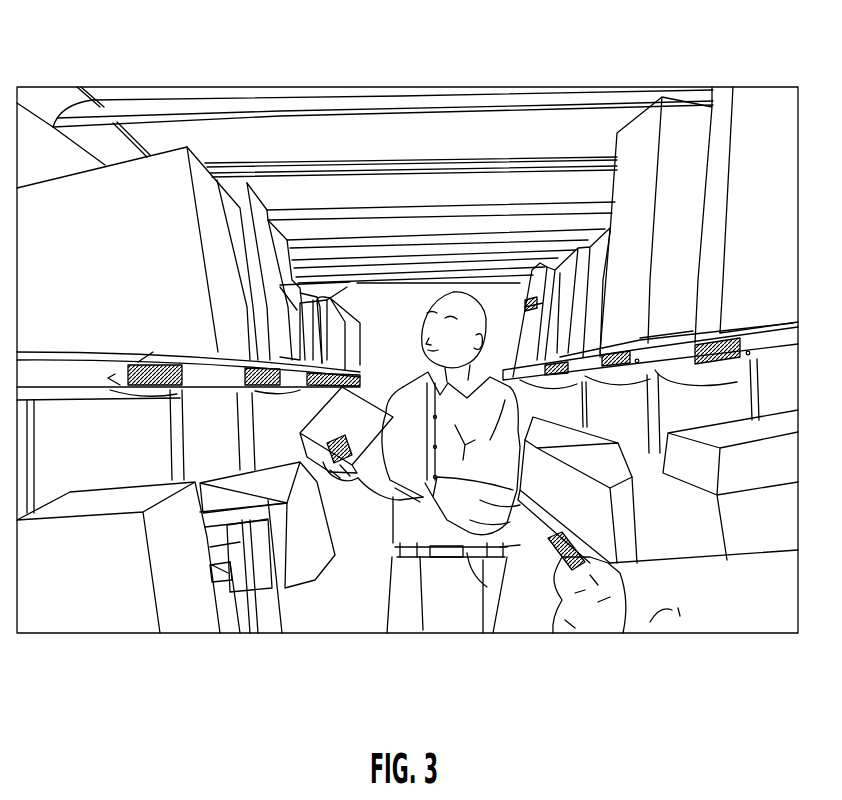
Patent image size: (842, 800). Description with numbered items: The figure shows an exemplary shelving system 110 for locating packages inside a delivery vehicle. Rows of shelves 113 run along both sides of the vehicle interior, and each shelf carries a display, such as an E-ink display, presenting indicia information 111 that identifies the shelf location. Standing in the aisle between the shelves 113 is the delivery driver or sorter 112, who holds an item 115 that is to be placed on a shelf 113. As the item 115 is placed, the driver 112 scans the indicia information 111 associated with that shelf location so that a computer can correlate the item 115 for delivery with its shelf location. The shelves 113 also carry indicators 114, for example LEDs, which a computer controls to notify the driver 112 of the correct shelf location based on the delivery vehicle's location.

The shelving system 110 is at (620, 87).
The indicia information 111 is at (182, 378).
The delivery driver or sorter 112 is at (450, 297).
The shelves 113 is at (108, 378).
The indicators 114 is at (752, 357).
The item 115 is at (360, 387).